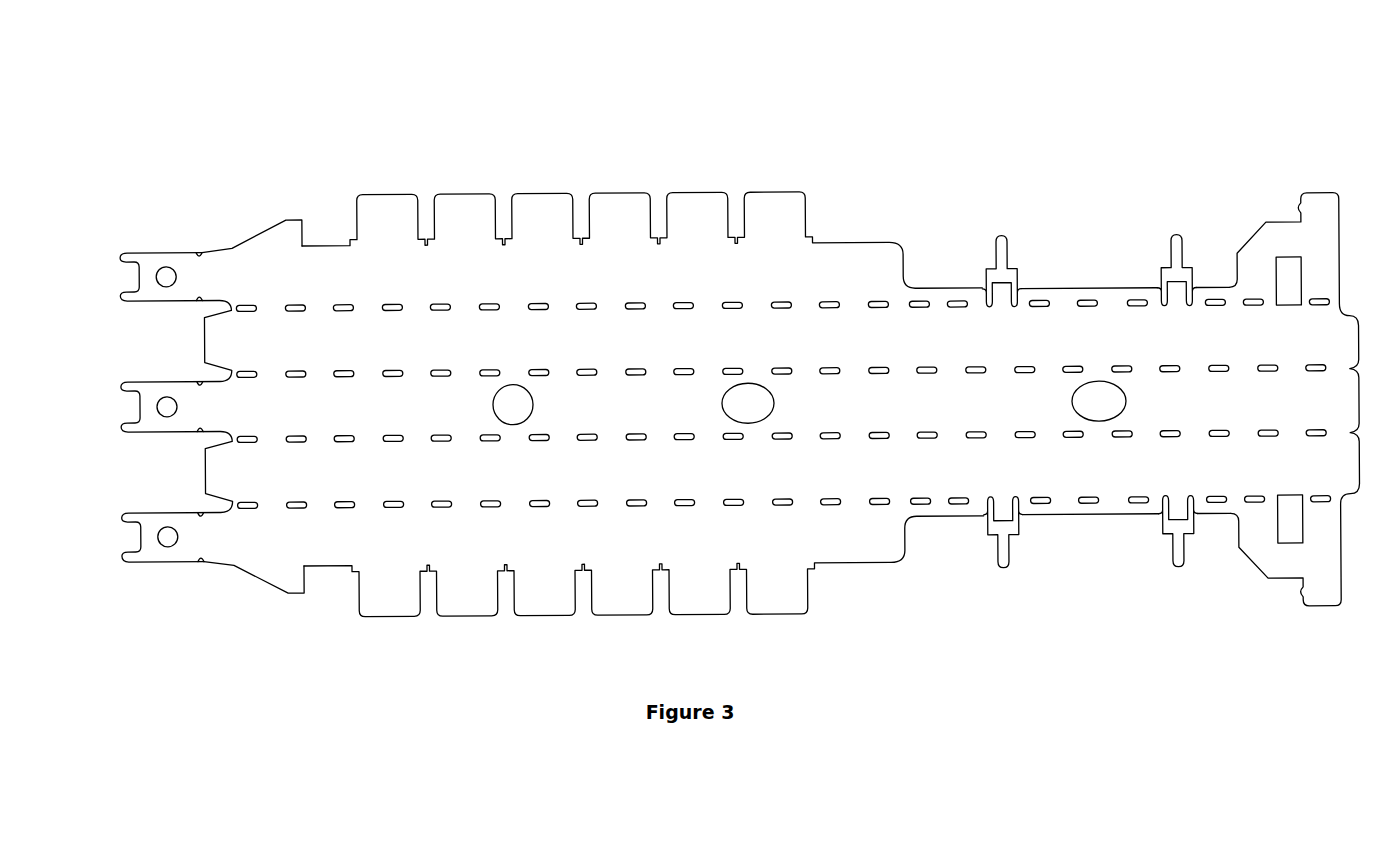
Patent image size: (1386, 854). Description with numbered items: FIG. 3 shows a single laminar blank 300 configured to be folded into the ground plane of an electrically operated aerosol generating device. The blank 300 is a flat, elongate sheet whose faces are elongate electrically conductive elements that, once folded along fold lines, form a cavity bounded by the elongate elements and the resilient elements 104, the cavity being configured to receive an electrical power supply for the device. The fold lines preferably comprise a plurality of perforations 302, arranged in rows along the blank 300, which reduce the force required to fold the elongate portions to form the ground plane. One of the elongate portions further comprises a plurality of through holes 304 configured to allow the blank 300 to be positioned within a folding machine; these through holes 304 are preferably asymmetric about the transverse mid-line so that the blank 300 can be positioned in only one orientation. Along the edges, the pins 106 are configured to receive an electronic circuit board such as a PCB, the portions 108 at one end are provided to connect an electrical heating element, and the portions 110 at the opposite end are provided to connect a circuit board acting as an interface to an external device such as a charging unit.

The rail body 300 is at (870, 212).
The resilient elements 104 is at (390, 217).
The pins 106 is at (1000, 573).
The portions 108 is at (1315, 215).
The portions 110 is at (147, 277).
The slot holes 302 is at (829, 511).
The round holes 304 is at (506, 414).